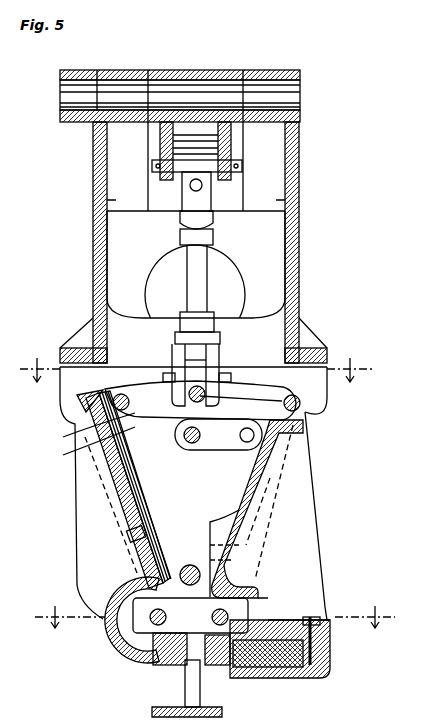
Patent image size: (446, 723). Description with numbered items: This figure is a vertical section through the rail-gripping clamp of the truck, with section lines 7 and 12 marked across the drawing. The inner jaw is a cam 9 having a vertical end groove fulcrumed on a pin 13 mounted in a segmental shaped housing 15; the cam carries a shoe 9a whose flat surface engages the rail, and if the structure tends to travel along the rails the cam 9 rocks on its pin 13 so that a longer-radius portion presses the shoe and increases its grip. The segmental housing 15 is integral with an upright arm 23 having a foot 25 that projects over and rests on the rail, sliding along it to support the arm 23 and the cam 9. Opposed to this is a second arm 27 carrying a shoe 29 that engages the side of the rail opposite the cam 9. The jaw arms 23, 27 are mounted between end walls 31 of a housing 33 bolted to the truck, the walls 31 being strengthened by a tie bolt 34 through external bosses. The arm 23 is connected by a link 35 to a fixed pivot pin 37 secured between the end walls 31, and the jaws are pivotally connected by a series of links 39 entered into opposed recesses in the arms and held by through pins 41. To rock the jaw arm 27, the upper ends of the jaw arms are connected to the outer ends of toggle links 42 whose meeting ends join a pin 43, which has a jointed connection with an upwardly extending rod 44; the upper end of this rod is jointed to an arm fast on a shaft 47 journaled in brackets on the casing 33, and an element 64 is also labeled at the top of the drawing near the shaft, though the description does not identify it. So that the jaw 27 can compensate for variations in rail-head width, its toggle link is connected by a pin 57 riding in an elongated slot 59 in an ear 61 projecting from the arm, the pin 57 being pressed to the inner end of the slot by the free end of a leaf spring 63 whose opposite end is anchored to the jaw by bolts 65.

The section line 7- 7 is at (195, 365).
The section line 12- 12 is at (216, 612).
The housing 33 is at (299, 278).
The shaft 47 is at (192, 90).
The piston 64 is at (230, 80).
The rod 44 is at (188, 284).
The toggle links 42 is at (154, 386).
The pin 57 is at (121, 393).
The pin 43 is at (192, 400).
The link 35 is at (223, 450).
The fixed pivot pin 37 is at (190, 443).
The second arm 27 is at (78, 526).
The elongated slot 59 is at (87, 428).
The ear 61 is at (88, 444).
The leaf spring 63 is at (164, 494).
The bolts 65 is at (179, 528).
The tie bolt 34 is at (190, 565).
The end walls 31 is at (278, 485).
The upright arm 23 is at (307, 536).
The through pins 41 is at (152, 610).
The links 39 is at (140, 628).
The shoe 29 is at (172, 650).
The foot 25 is at (187, 660).
The shoe 9a is at (203, 662).
The cam 9 is at (290, 665).
The pin 13 is at (330, 652).
The segmental shaped housing 15 is at (330, 673).